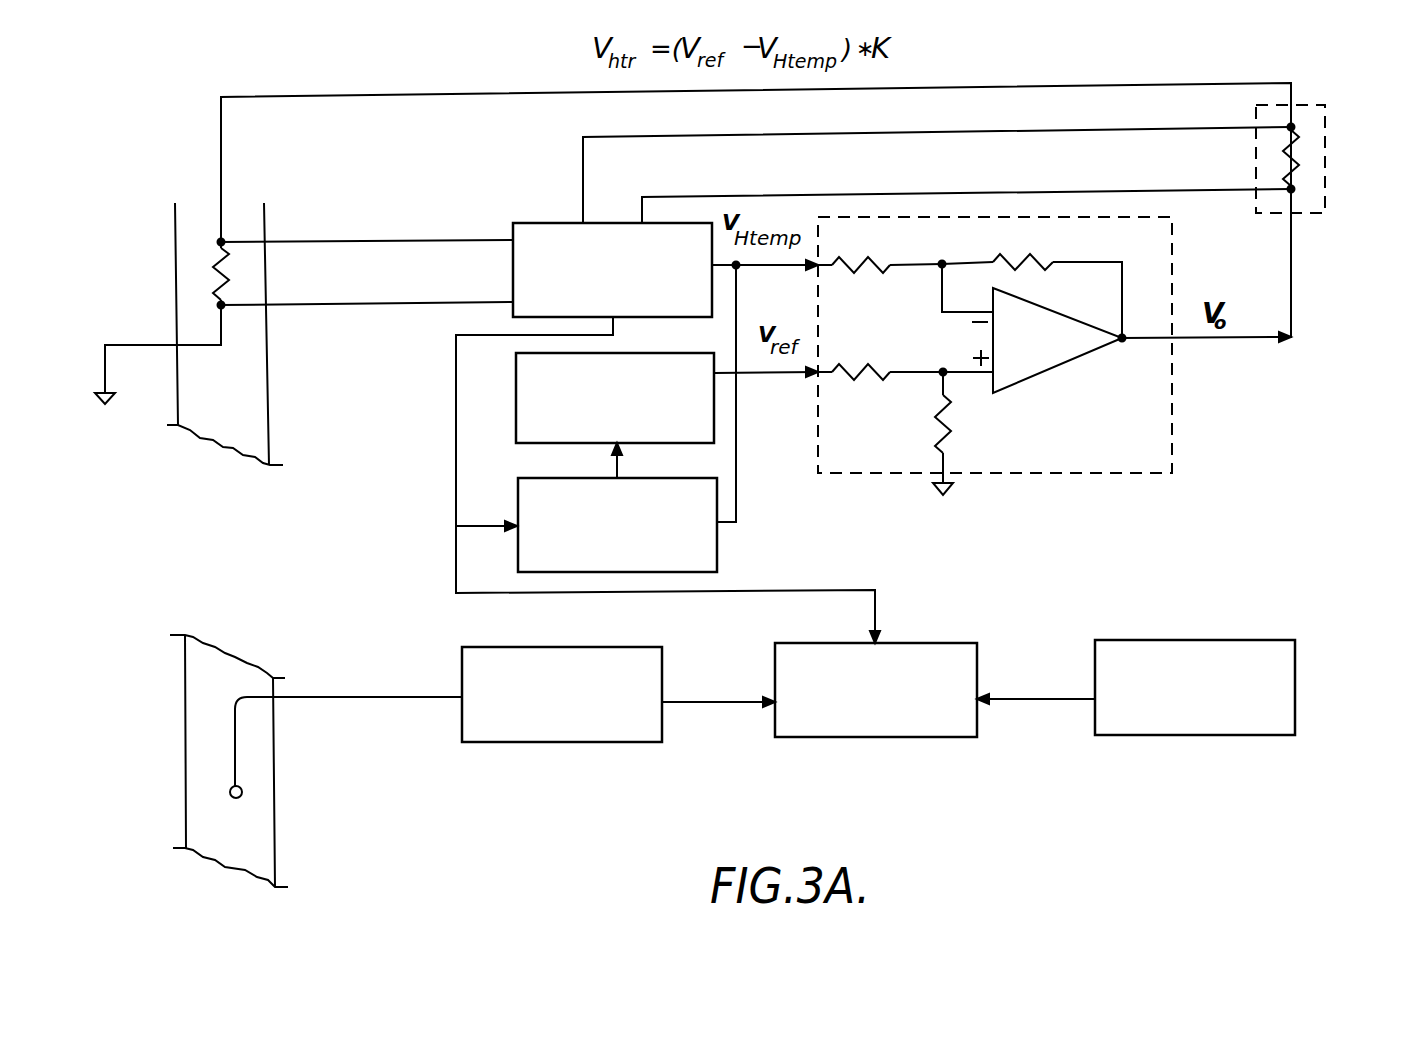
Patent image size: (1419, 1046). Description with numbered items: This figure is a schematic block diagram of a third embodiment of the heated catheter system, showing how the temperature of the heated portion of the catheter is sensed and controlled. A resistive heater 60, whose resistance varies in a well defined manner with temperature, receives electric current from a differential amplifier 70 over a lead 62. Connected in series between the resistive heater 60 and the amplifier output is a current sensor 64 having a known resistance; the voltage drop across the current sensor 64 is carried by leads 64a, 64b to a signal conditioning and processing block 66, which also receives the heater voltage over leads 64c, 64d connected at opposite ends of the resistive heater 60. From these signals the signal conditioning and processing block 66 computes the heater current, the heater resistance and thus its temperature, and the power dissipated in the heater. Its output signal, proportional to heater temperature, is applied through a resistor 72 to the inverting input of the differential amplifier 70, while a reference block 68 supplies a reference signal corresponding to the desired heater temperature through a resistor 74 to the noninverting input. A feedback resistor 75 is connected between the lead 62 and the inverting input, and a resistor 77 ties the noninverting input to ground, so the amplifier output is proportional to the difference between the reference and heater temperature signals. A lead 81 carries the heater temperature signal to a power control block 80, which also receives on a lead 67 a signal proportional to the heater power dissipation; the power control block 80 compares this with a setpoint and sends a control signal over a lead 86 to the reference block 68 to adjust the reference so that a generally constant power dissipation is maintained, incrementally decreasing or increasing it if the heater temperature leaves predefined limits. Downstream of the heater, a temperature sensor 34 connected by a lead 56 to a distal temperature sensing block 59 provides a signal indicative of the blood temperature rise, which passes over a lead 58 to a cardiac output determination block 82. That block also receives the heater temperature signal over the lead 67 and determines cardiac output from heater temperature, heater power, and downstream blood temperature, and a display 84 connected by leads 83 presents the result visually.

The temperature sensor 34 is at (243, 793).
The lead 56 is at (370, 697).
The lead 58 is at (705, 703).
The distal temperature sensing block 59 is at (462, 662).
The resistive heater 60 is at (210, 272).
The lead 62 is at (395, 97).
The current sensor 64 is at (1293, 163).
The lead 64a is at (1192, 127).
The lead 64b is at (1192, 190).
The lead 64c is at (363, 240).
The lead 64d is at (363, 304).
The signal conditioning and processing block 66 is at (512, 226).
The lead 67 is at (455, 558).
The reference block 68 is at (515, 432).
The differential amplifier 70 is at (1060, 368).
The resistor 72 is at (880, 268).
The resistor 74 is at (880, 372).
The feedback resistor 75 is at (1047, 262).
The resistor 77 is at (942, 417).
The power control block 80 is at (717, 558).
The lead 81 is at (738, 470).
The cardiac output determination block 82 is at (775, 655).
The leads 83 is at (1020, 700).
The display 84 is at (1095, 655).
The lead 86 is at (618, 467).